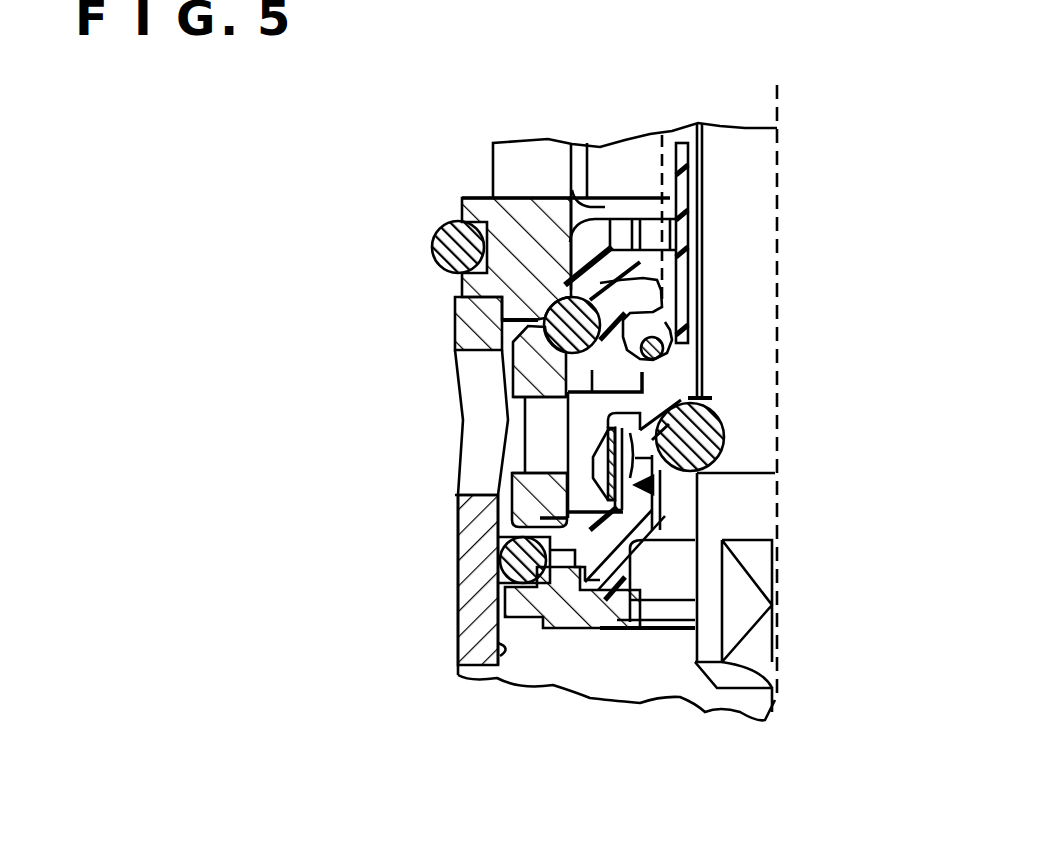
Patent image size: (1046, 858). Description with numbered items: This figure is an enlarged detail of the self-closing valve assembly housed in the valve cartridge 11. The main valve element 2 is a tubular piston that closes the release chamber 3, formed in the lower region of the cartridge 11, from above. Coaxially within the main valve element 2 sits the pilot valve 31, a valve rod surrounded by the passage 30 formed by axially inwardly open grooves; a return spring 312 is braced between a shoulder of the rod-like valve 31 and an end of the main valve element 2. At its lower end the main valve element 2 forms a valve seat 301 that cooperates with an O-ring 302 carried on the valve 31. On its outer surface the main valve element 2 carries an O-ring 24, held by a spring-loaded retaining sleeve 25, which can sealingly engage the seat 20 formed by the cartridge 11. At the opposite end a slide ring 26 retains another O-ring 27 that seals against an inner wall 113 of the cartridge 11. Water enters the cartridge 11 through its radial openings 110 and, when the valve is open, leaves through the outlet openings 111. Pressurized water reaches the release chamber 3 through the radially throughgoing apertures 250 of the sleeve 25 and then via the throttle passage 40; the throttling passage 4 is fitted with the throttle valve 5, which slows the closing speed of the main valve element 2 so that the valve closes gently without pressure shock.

The outlet openings 111 is at (572, 200).
The seat 20 is at (462, 297).
The spring-loaded retaining sleeve 25 is at (500, 377).
The radial openings 110 is at (488, 398).
The radially throughgoing apertures 250 is at (547, 433).
The throttle valve 5 is at (567, 458).
The valve cartridge 11 is at (455, 521).
The O-ring 27 is at (503, 567).
The slide ring 26 is at (520, 606).
The inner wall 113 is at (500, 662).
The release chamber 3 is at (548, 660).
The O-ring 24 is at (705, 250).
The main valve element 2 is at (705, 295).
The return spring 312 is at (668, 345).
The passage 30 is at (705, 360).
The pilot valve 31 is at (760, 365).
The valve seat 301 is at (705, 405).
The O-ring 302 is at (705, 445).
The throttle passage 4 is at (660, 500).
The throttle passage 40 is at (677, 522).